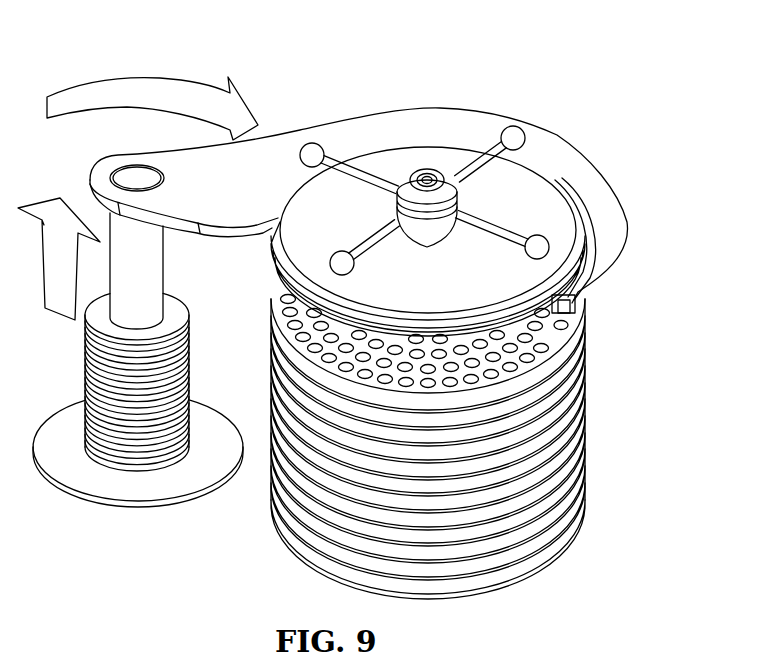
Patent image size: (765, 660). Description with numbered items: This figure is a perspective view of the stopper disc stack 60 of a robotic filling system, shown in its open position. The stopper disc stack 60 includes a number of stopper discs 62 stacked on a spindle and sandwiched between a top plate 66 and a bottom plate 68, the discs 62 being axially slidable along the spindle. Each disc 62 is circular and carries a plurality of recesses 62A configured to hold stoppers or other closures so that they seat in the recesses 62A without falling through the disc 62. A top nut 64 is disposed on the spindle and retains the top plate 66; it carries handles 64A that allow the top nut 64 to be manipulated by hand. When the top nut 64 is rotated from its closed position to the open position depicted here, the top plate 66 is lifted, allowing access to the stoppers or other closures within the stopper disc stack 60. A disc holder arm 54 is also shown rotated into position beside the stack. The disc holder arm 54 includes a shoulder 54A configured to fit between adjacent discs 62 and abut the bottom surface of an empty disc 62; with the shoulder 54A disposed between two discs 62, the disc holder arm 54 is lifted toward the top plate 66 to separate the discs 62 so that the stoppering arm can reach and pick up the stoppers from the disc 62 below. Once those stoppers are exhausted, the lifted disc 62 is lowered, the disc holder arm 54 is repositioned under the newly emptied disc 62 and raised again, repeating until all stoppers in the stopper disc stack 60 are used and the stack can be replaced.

The disc holder arm 54 is at (457, 120).
The shoulder 54A is at (578, 302).
The stopper disc stack 60 is at (492, 331).
The stopper disc 62 is at (584, 373).
The recess 62A is at (568, 326).
The top nut 64 is at (401, 183).
The handle 64A is at (503, 138).
The top plate 66 is at (545, 198).
The bottom plate 68 is at (560, 562).